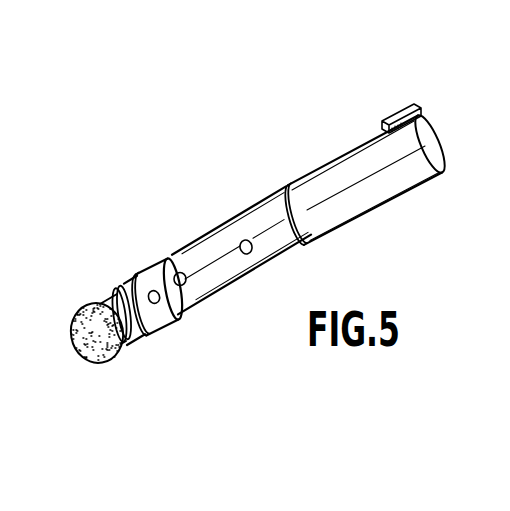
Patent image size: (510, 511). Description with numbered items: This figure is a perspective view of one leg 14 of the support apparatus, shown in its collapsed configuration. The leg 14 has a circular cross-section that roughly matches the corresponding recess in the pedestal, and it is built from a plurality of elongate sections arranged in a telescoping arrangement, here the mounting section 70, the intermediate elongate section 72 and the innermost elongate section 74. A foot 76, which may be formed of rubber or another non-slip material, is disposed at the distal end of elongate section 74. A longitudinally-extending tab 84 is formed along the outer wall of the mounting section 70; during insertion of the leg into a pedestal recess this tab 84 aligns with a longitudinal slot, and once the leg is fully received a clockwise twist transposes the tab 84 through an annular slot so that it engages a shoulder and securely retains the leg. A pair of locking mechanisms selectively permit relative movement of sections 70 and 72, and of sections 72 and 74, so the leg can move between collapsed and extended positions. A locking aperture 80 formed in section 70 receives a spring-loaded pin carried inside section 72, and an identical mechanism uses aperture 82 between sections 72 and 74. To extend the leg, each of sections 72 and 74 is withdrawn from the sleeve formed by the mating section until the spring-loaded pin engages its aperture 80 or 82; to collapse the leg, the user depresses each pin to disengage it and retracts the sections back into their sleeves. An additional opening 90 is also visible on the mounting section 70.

The leg 14 is at (268, 173).
The mounting section 70 is at (210, 296).
The elongate section 72 is at (163, 322).
The elongate section 74 is at (129, 341).
The foot 76 is at (91, 348).
The locking aperture 80 is at (178, 272).
The aperture 82 is at (141, 276).
The tab 84 is at (416, 106).
The hole 90 is at (244, 240).